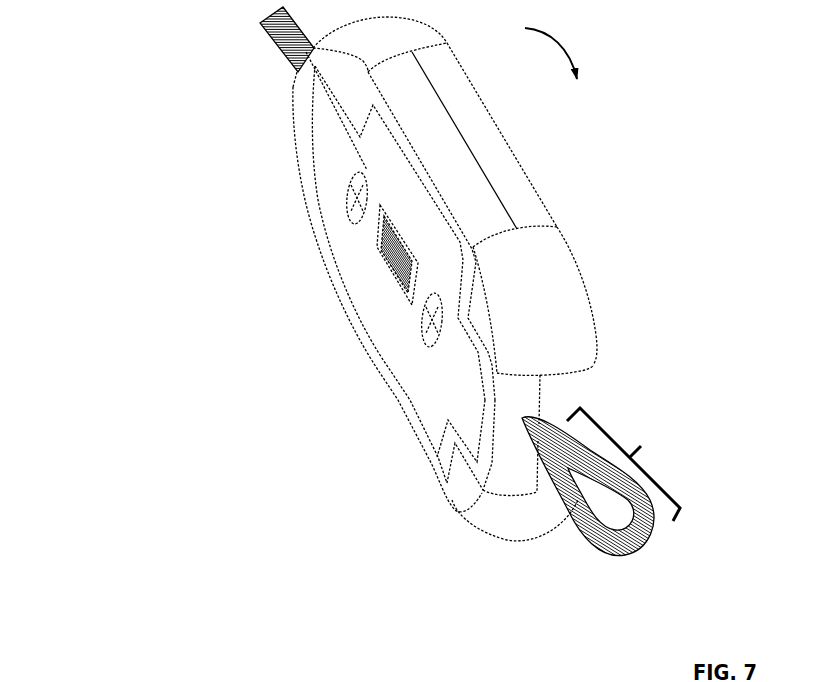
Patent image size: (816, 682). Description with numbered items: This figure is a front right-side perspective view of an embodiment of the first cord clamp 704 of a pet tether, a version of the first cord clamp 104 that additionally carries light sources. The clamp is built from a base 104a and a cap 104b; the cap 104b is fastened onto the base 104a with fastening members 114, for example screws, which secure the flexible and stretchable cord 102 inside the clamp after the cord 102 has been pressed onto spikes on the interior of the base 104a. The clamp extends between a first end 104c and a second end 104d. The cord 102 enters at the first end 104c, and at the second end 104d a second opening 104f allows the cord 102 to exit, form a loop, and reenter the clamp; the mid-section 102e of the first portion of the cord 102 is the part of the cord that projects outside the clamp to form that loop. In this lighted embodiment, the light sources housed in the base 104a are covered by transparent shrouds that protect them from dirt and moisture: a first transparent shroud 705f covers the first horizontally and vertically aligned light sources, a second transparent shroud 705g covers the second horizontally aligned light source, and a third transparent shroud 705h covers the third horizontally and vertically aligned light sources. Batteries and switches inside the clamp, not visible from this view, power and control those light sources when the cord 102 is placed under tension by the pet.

The flexible and stretchable cord 102 is at (280, 34).
The mid-section of the first portion of the cord 102e is at (604, 489).
The first cord clamp 104 is at (406, 344).
The base 104a is at (526, 187).
The cap 104b is at (432, 157).
The first end 104c is at (296, 86).
The second end 104d is at (581, 396).
The second opening 104f is at (522, 418).
The fastening members 114 is at (422, 320).
The first cord clamp 704 is at (533, 43).
The first transparent shroud 705f is at (431, 41).
The second transparent shroud 705g is at (559, 291).
The third transparent shroud 705h is at (494, 529).